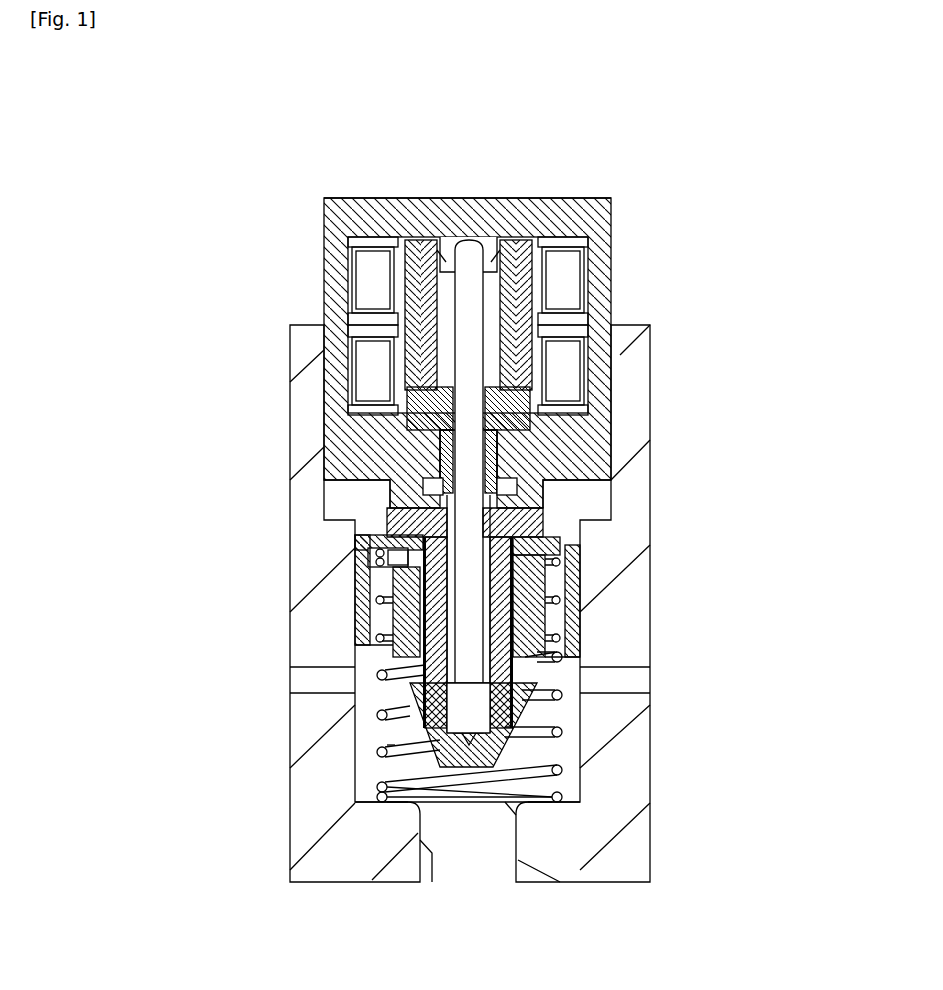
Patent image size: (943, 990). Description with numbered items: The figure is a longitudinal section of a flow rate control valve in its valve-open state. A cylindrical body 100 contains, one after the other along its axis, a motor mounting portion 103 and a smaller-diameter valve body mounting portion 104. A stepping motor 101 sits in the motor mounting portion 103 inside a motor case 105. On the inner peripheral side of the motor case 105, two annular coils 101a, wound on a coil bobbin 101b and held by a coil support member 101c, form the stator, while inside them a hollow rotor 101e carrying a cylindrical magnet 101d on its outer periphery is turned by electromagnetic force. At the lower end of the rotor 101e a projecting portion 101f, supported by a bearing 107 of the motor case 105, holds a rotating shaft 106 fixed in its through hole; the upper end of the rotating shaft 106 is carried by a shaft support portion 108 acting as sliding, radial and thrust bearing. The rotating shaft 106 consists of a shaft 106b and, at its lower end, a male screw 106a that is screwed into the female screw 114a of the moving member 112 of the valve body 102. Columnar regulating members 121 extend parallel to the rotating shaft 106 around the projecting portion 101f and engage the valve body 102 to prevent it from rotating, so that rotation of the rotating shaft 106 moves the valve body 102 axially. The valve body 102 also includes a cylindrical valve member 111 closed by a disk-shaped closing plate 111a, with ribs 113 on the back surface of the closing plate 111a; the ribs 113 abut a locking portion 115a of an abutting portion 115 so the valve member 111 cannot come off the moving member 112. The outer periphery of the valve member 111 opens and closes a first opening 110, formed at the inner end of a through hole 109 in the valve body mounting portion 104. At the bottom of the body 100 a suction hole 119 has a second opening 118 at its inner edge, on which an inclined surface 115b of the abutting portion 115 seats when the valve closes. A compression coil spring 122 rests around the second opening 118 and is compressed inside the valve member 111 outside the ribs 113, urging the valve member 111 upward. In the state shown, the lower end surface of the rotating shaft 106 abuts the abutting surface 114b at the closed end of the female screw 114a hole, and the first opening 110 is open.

The body 100 is at (652, 358).
The motor 101 is at (538, 275).
The coils 101a is at (362, 355).
The coil bobbin 101b is at (388, 268).
The coil support member 101c is at (368, 238).
The magnet 101d is at (522, 250).
The rotor 101e is at (412, 402).
The projecting portion 101f is at (466, 447).
The valve body 102 is at (592, 583).
The motor mounting portion 103 is at (600, 498).
The valve body mounting portion 104 is at (570, 735).
The motor case 105 is at (565, 198).
The rotating shaft 106 is at (470, 466).
The male screw 106a is at (455, 680).
The shaft 106b is at (470, 600).
The bearing 107 is at (512, 445).
The shaft support portion 108 is at (486, 250).
The through hole 109 is at (632, 694).
The first opening 110 is at (625, 672).
The valve member 111 is at (570, 618).
The closing plate 111a is at (560, 522).
The moving member 112 is at (380, 625).
The ribs 113 is at (372, 552).
The female screw 114a is at (398, 520).
The abutting surface 114b is at (468, 720).
The abutting portion 115 is at (588, 747).
The locking portion 115a is at (540, 680).
The inclined surface 115b is at (553, 777).
The second opening 118 is at (512, 797).
The suction hole 119 is at (432, 858).
The regulating member 121 is at (455, 528).
The compression coil spring 122 is at (390, 740).